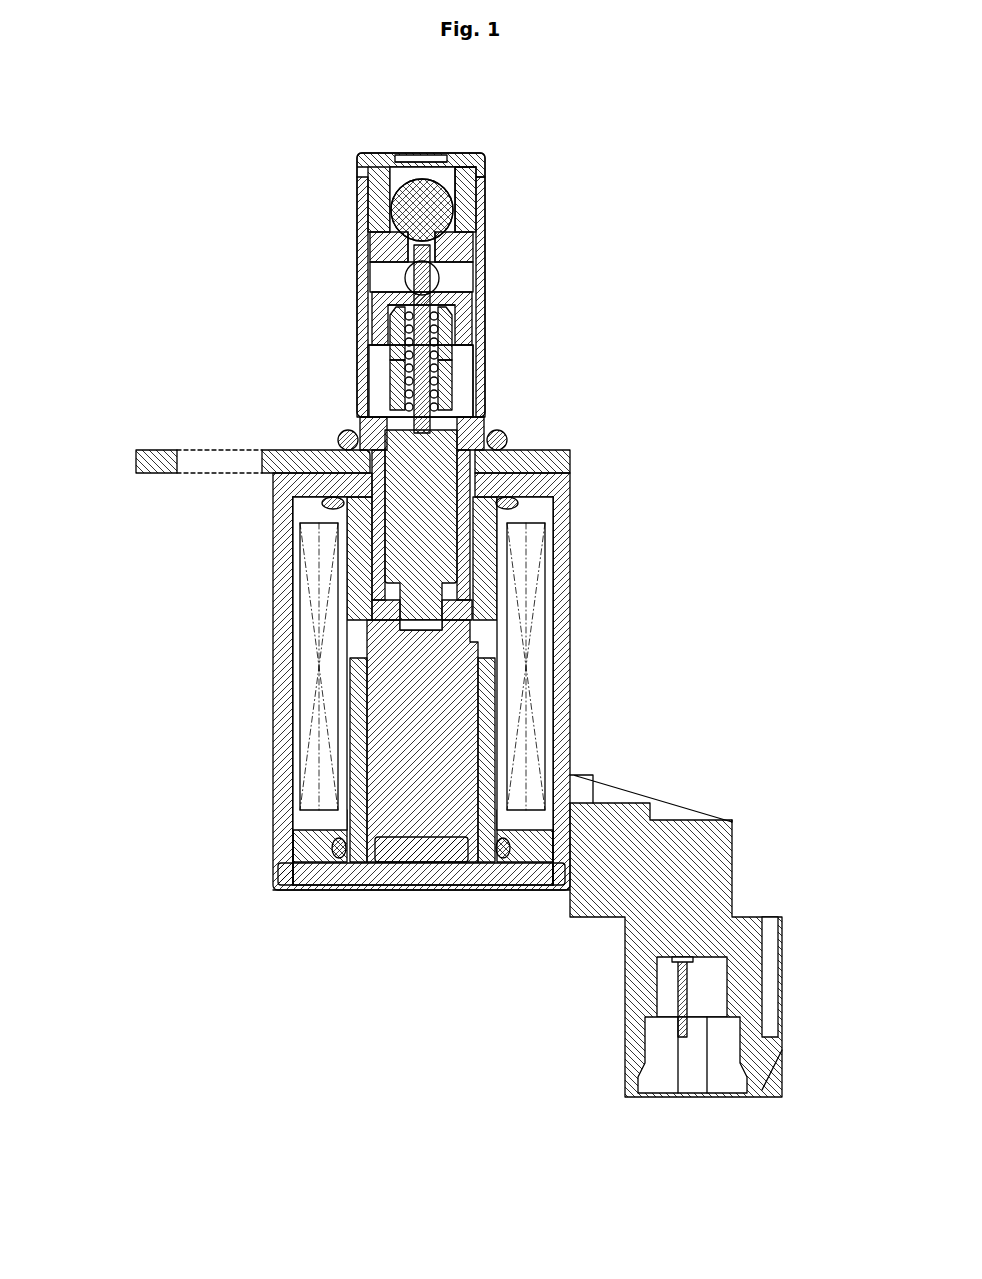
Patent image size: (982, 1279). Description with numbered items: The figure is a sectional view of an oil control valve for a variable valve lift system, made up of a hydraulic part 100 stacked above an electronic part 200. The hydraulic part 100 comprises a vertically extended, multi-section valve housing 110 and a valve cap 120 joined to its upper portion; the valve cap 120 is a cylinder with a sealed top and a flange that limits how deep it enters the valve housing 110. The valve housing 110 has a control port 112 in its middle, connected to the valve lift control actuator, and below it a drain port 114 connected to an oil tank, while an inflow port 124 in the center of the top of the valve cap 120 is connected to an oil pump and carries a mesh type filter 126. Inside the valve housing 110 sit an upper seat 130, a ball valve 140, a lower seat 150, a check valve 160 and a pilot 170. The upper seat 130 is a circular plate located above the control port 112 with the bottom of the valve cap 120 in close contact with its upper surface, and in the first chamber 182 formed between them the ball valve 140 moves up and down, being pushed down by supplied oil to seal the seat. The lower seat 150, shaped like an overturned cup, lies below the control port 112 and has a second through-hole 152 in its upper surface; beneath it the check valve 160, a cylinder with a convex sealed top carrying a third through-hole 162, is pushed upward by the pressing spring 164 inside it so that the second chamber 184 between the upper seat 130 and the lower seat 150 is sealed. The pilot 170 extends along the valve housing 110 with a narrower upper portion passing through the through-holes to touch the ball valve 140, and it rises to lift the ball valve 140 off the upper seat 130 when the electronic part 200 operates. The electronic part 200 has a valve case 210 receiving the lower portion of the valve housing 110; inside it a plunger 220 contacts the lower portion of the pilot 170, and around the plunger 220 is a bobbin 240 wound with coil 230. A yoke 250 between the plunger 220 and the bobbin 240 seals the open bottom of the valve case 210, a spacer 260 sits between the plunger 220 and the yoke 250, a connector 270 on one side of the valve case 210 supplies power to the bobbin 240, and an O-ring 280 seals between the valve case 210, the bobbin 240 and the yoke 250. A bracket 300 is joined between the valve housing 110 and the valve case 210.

The hydraulic part 100 is at (334, 138).
The valve housing 110 is at (358, 290).
The control port 112 is at (446, 271).
The drain port 114 is at (482, 368).
The valve cap 120 is at (372, 208).
The inflow port 124 is at (437, 153).
The mesh type filter 126 is at (412, 153).
The upper seat 130 is at (461, 255).
The ball valve 140 is at (442, 195).
The lower seat 150 is at (470, 332).
The second through-hole 152 is at (471, 291).
The check valve 160 is at (390, 360).
The third through-hole 162 is at (404, 321).
The pressing spring 164 is at (392, 406).
The pilot 170 is at (444, 442).
The first chamber 182 is at (456, 181).
The second chamber 184 is at (381, 277).
The electronic part 200 is at (177, 641).
The valve case 210 is at (272, 606).
The plunger 220 is at (450, 706).
The coil 230 is at (529, 660).
The bobbin 240 is at (571, 633).
The yoke 250 is at (483, 747).
The spacer 260 is at (416, 861).
The connector 270 is at (782, 976).
The O-ring 280 is at (532, 501).
The bracket 300 is at (135, 432).